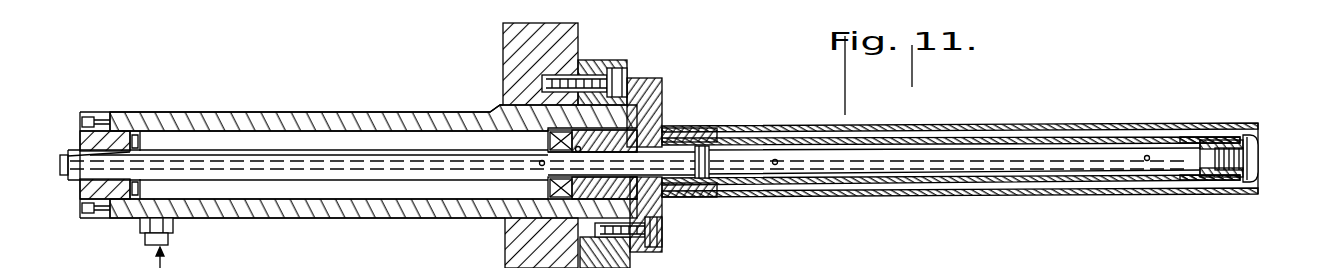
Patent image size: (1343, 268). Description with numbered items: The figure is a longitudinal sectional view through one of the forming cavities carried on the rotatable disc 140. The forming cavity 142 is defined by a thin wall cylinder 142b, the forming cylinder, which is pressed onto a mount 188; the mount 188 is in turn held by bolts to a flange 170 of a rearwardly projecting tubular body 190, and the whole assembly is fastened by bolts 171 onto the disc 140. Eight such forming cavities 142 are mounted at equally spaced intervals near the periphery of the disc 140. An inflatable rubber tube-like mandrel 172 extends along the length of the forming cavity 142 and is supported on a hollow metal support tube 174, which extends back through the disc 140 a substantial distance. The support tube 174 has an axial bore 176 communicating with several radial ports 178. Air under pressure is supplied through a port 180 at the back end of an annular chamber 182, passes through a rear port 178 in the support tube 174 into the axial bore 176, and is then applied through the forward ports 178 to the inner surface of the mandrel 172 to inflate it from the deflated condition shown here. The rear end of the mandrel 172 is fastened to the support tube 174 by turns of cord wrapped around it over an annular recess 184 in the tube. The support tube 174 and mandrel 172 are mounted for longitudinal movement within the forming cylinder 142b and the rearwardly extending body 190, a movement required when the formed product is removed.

The rotatable disc 140 is at (503, 50).
The forming cavity 142 is at (1222, 135).
The thin wall cylinder 142b is at (1160, 124).
The flange 170 is at (598, 62).
The bolts 171 is at (627, 63).
The inflatable rubber mandrel 172 is at (947, 182).
The support tube 174 is at (283, 150).
The axial bore 176 is at (236, 158).
The radial ports 178 is at (541, 165).
The port 180 is at (140, 217).
The annular chamber 182 is at (262, 187).
The annular recess 184 is at (708, 162).
The mount 188 is at (665, 130).
The tubular body 190 is at (198, 120).